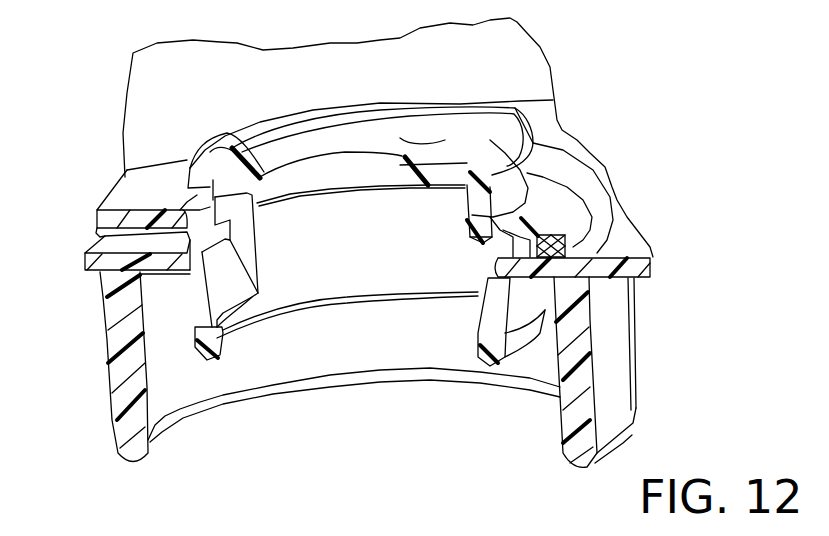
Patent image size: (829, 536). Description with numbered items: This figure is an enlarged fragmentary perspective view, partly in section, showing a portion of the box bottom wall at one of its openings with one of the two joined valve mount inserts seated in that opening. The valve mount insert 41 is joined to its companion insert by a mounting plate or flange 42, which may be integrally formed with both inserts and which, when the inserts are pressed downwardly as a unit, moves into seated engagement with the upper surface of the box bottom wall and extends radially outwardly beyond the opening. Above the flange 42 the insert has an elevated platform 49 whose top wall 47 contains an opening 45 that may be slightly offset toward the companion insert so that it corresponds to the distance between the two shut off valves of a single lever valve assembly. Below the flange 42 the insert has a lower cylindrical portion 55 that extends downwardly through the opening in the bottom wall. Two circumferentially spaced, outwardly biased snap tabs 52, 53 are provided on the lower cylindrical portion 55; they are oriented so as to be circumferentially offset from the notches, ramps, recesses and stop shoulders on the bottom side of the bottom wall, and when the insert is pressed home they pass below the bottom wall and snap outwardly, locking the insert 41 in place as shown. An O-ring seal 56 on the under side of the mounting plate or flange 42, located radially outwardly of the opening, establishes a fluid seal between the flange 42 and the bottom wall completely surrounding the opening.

The valve mount insert 41 is at (191, 139).
The mounting plate or flange 42 is at (127, 193).
The opening 45 is at (403, 130).
The top wall 47 is at (487, 137).
The elevated platform 49 is at (530, 185).
The snap tab 52 is at (200, 305).
The snap tab 53 is at (497, 298).
The lower cylindrical portion 55 is at (323, 273).
The O-ring seal 56 is at (552, 251).